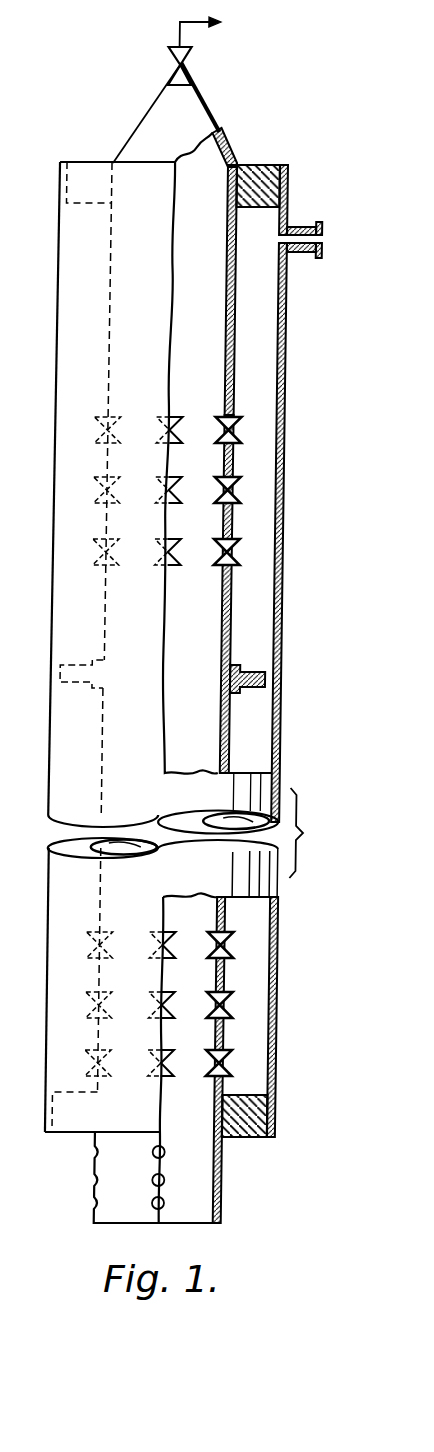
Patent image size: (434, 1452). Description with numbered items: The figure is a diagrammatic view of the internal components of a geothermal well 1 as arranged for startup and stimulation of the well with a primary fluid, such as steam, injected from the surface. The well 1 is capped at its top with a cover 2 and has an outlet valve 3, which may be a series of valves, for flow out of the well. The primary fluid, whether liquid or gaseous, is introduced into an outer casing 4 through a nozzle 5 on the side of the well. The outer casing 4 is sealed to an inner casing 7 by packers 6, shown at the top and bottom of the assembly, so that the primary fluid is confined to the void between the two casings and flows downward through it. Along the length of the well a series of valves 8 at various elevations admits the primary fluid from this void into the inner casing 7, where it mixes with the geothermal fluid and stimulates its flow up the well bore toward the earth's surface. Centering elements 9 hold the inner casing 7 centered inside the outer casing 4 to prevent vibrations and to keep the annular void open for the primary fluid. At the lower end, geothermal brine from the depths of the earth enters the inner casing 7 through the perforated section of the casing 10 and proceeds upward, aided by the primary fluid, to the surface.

The geothermal well 1 is at (287, 332).
The cover 2 is at (221, 133).
The outlet valve 3 is at (186, 72).
The outer casing 4 is at (286, 395).
The nozzle 5 is at (321, 222).
The packers 6 is at (255, 168).
The inner casing 7 is at (238, 632).
The valves 8 is at (246, 553).
The centering elements 9 is at (273, 680).
The perforated section of the casing 10 is at (237, 1223).